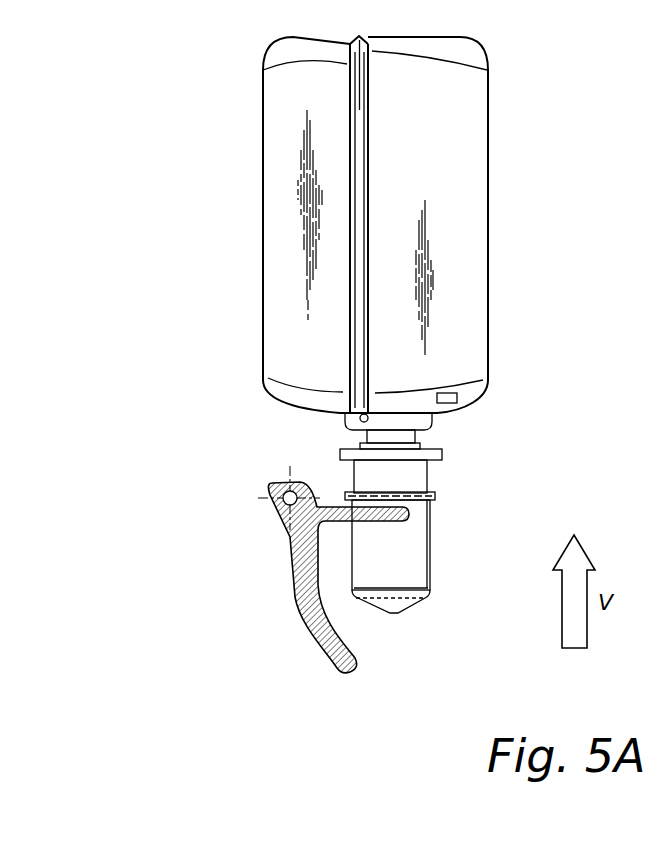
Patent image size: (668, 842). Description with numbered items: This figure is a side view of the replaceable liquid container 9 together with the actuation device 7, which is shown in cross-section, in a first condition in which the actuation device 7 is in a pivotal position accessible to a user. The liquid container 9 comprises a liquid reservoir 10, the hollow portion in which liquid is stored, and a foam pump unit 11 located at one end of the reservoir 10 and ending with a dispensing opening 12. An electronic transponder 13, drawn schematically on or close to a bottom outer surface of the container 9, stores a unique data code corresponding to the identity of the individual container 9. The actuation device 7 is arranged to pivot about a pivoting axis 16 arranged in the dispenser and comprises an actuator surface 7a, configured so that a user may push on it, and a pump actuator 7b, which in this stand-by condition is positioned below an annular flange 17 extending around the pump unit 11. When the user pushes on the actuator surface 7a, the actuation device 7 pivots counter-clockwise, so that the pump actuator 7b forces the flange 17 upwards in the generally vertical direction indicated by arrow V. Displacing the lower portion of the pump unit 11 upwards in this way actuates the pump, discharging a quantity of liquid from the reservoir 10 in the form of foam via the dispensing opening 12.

The actuation device 7 is at (298, 593).
The actuator surface 7a is at (317, 648).
The pump actuator 7b is at (327, 507).
The liquid container 9 is at (341, 360).
The liquid reservoir 10 is at (418, 224).
The foam pump unit 11 is at (471, 549).
The dispensing opening 12 is at (388, 615).
The electronic transponder 13 is at (448, 392).
The pivoting axis 16 is at (272, 503).
The annular flange 17 is at (425, 492).